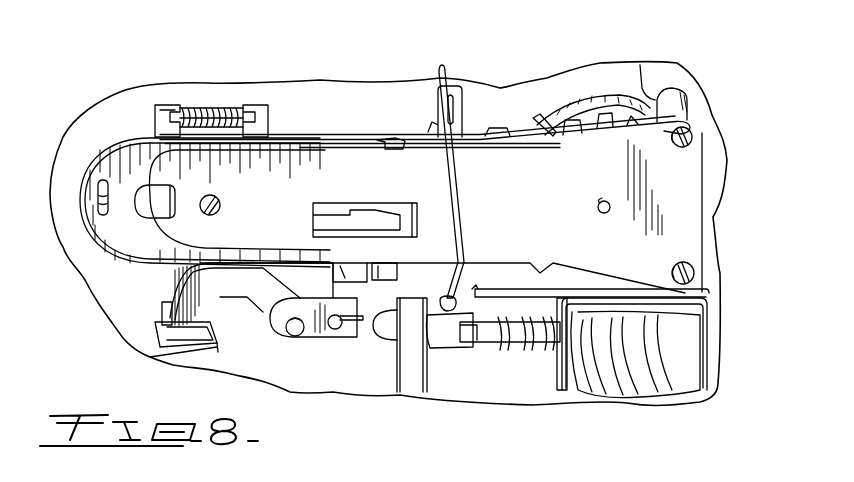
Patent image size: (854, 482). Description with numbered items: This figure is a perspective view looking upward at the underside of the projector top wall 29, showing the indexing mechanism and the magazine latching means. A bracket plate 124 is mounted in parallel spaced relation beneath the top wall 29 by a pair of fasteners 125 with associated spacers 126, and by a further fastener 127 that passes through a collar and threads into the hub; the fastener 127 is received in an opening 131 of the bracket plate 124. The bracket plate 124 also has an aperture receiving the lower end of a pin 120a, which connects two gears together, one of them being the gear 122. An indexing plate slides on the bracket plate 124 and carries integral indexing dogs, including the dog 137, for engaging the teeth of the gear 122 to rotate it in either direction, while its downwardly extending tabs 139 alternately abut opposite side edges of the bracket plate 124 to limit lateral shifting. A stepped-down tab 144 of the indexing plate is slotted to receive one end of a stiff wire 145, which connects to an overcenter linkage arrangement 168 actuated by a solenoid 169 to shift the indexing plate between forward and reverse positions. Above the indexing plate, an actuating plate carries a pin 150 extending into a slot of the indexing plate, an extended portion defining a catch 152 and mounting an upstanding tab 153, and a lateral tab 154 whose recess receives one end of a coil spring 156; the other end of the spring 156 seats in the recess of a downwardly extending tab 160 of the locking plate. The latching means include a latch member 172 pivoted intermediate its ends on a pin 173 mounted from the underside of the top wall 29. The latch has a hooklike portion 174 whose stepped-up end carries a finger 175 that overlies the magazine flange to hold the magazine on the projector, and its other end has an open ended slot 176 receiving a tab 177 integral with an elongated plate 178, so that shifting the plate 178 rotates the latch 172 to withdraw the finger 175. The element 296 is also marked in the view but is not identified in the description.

The projector top wall 29 is at (346, 111).
The bracket plate 124 is at (528, 236).
The coil spring 156 is at (208, 105).
The tab 160 is at (165, 132).
The tab 154 is at (258, 112).
The pin 150 is at (106, 188).
The fastener 127 is at (220, 203).
The catch 152 is at (347, 210).
The opening 131 is at (410, 205).
The tabs 139 is at (397, 151).
The tab 144 is at (442, 113).
The stiff wire 145 is at (462, 173).
The indexing dog 137 is at (567, 98).
The gear 122 is at (573, 102).
The spacers 126 is at (690, 117).
The fasteners 125 is at (686, 150).
The pin 120a is at (603, 213).
The plate 178 is at (354, 268).
The tab 153 is at (375, 277).
The latch member 172 is at (263, 310).
The pin 173 is at (296, 334).
The open ended slot 176 is at (334, 315).
The hooklike portion 174 is at (197, 288).
The finger 175 is at (163, 325).
The edge 296 is at (218, 352).
The tab 177 is at (362, 322).
The overcenter linkage arrangement 168 is at (455, 334).
The solenoid 169 is at (685, 366).